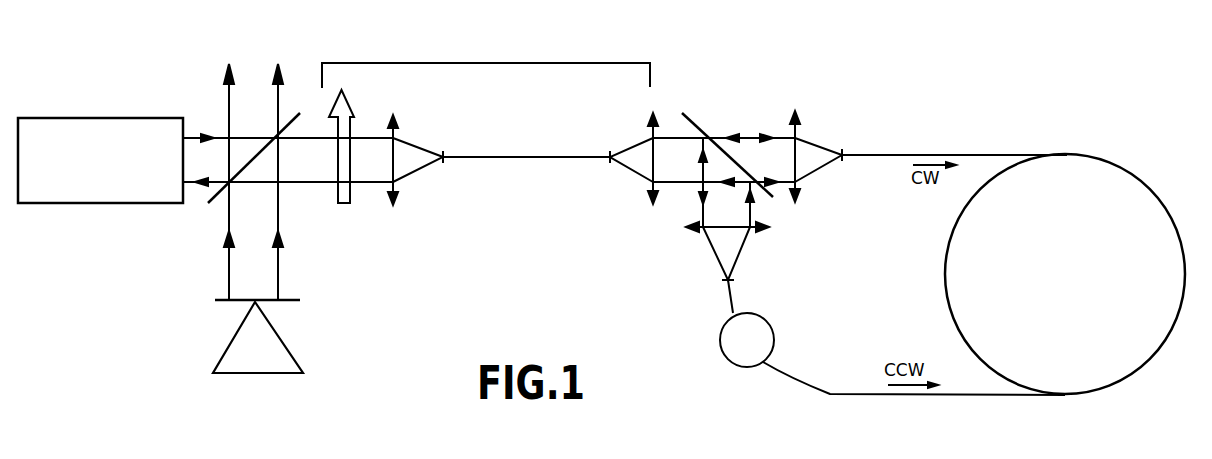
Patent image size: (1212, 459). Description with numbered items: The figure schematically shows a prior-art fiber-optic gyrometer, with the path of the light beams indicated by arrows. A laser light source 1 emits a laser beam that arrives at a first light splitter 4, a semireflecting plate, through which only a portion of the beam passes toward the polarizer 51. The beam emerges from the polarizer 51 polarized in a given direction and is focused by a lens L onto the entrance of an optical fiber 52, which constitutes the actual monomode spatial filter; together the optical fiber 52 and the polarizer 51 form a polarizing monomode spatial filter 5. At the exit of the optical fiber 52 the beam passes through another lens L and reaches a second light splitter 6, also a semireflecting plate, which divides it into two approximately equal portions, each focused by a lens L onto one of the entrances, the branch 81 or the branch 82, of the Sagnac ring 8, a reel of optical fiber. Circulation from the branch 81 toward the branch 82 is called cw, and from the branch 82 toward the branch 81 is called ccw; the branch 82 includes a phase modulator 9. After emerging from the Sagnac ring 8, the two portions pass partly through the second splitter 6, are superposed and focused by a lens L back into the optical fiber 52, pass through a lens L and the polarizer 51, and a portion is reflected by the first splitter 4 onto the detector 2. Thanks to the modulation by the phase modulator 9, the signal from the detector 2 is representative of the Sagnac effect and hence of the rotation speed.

The laser light source 1 is at (103, 193).
The detector 2 is at (280, 353).
The first light splitter 4 is at (290, 121).
The polarizing monomode spatial filter 5 is at (498, 62).
The polarizer 51 is at (343, 207).
The optical fiber 52 is at (527, 158).
The second light splitter 6 is at (690, 112).
The lens L is at (397, 206).
The Sagnac ring 8 is at (1158, 345).
The branch 81 is at (892, 152).
The branch 82 is at (733, 298).
The phase modulator 9 is at (738, 347).